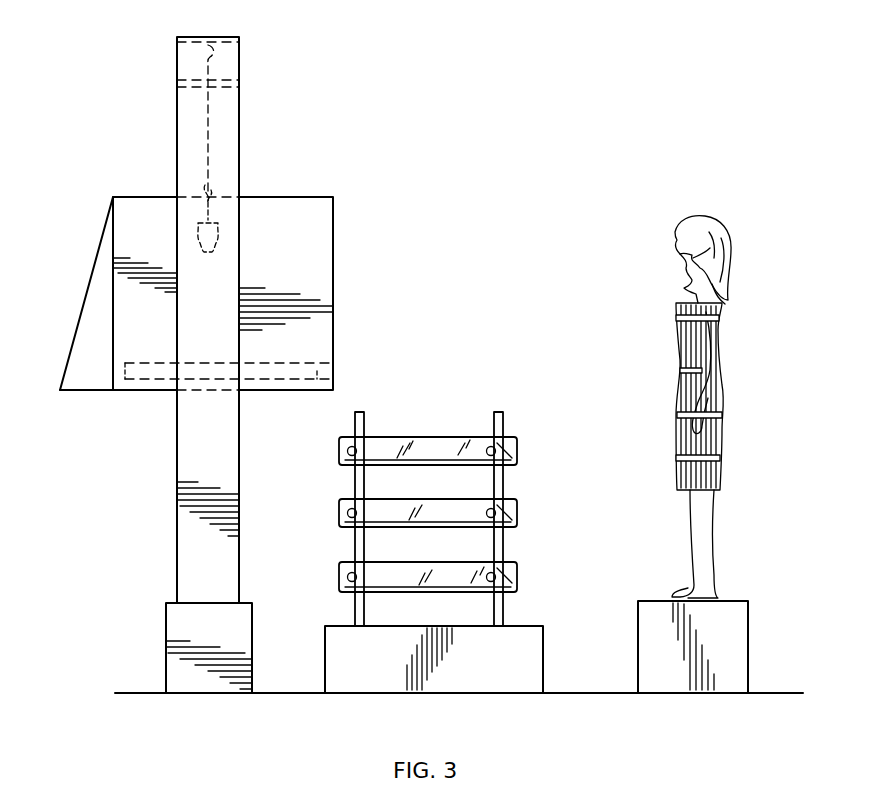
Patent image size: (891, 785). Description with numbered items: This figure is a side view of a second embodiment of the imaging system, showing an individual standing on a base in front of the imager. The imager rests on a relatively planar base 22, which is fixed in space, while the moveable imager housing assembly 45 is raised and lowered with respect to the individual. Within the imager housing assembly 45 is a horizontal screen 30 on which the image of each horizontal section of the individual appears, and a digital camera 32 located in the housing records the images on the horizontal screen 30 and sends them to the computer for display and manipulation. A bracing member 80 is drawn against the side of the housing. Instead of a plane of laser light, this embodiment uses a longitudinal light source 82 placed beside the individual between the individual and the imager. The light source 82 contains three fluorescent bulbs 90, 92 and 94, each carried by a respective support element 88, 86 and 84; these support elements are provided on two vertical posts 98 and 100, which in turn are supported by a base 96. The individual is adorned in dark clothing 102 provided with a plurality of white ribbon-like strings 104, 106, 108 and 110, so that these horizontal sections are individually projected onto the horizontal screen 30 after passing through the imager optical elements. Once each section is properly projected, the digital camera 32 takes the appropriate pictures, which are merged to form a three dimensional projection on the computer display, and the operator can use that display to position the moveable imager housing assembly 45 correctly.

The base 22 is at (168, 628).
The horizontal screen 30 is at (313, 360).
The digital camera 32 is at (207, 222).
The moveable imager housing assembly 45 is at (296, 210).
The support brace 80 is at (72, 303).
The longitudinal light source 82 is at (434, 559).
The support element 84 is at (505, 580).
The support element 86 is at (505, 517).
The support element 88 is at (506, 443).
The fluorescent bulb 90 is at (447, 437).
The fluorescent bulb 92 is at (382, 500).
The fluorescent bulb 94 is at (382, 564).
The base 96 is at (358, 683).
The vertical post 98 is at (354, 612).
The vertical post 100 is at (503, 608).
The dark clothing 102 is at (774, 407).
The white ribbon-like string 104 is at (719, 319).
The white ribbon-like string 106 is at (712, 371).
The white ribbon-like string 108 is at (722, 415).
The white ribbon-like string 110 is at (720, 457).